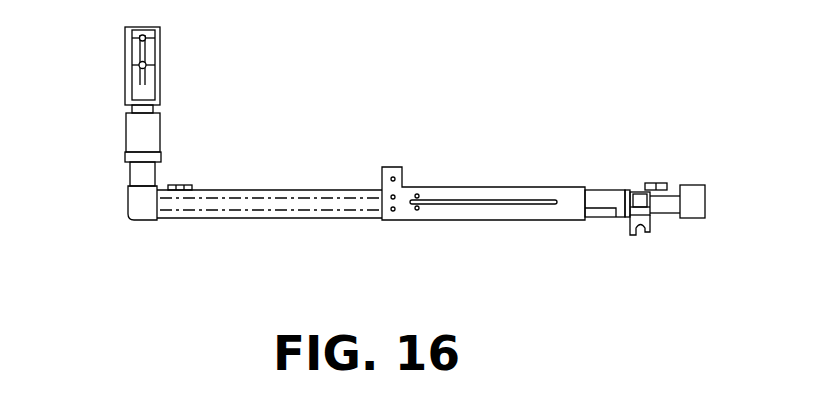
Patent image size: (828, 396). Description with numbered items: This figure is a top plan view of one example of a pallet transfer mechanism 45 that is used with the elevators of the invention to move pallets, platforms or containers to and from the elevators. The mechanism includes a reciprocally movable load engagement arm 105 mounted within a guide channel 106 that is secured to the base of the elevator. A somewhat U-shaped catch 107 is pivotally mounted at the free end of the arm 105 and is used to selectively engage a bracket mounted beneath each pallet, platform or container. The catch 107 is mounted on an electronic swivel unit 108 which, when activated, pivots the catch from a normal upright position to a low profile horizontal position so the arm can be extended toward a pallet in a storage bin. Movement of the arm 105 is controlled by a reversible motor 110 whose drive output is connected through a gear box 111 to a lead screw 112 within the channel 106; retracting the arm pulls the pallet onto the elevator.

The pallet transfer mechanism 45 is at (100, 134).
The load engagement arm 105 is at (537, 187).
The guide channel 106 is at (223, 218).
The catch 107 is at (645, 232).
The electronic swivel unit 108 is at (612, 188).
The reversible motor 110 is at (161, 62).
The gear box 111 is at (137, 205).
The lead screw 112 is at (255, 198).